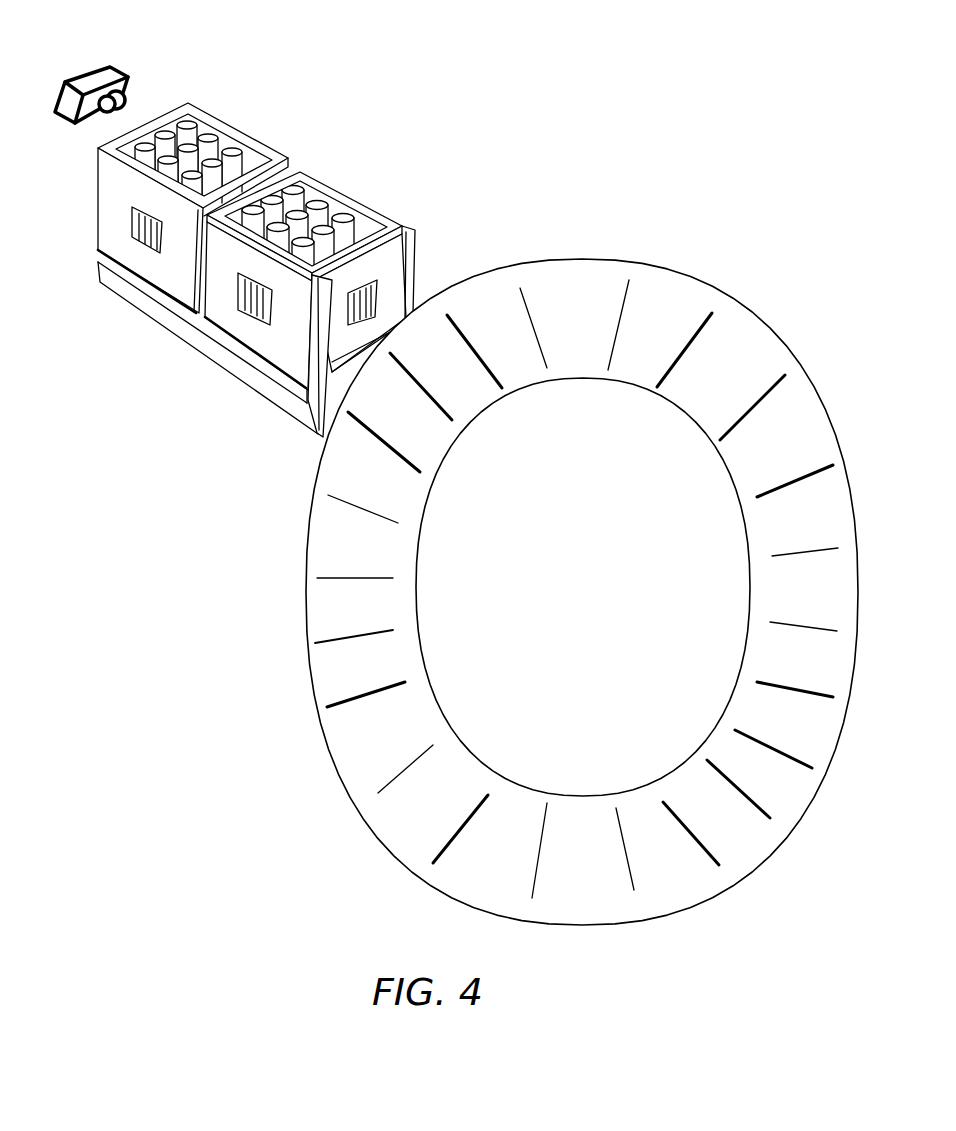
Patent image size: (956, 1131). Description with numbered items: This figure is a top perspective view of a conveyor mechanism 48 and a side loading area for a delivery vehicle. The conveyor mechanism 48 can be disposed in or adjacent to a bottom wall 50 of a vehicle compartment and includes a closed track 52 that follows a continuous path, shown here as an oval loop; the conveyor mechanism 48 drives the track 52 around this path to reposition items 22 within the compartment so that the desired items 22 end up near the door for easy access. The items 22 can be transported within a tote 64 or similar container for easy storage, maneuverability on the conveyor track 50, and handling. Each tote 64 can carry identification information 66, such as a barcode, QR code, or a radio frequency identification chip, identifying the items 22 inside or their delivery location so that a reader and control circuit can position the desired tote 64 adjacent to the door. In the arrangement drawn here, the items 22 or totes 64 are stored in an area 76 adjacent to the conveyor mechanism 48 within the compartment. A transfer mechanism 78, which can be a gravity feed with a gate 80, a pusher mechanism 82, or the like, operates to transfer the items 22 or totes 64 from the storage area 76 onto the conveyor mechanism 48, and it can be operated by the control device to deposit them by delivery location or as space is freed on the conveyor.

The items 22 is at (306, 196).
The conveyor mechanism 48 is at (622, 261).
The bottom wall 50 is at (582, 551).
The closed track 52 is at (748, 345).
The tote 64 is at (247, 135).
The identification information 66 is at (142, 245).
The area 76 is at (149, 340).
The transfer mechanism 78 is at (263, 246).
The gate 80 is at (417, 230).
The pusher mechanism 82 is at (128, 70).